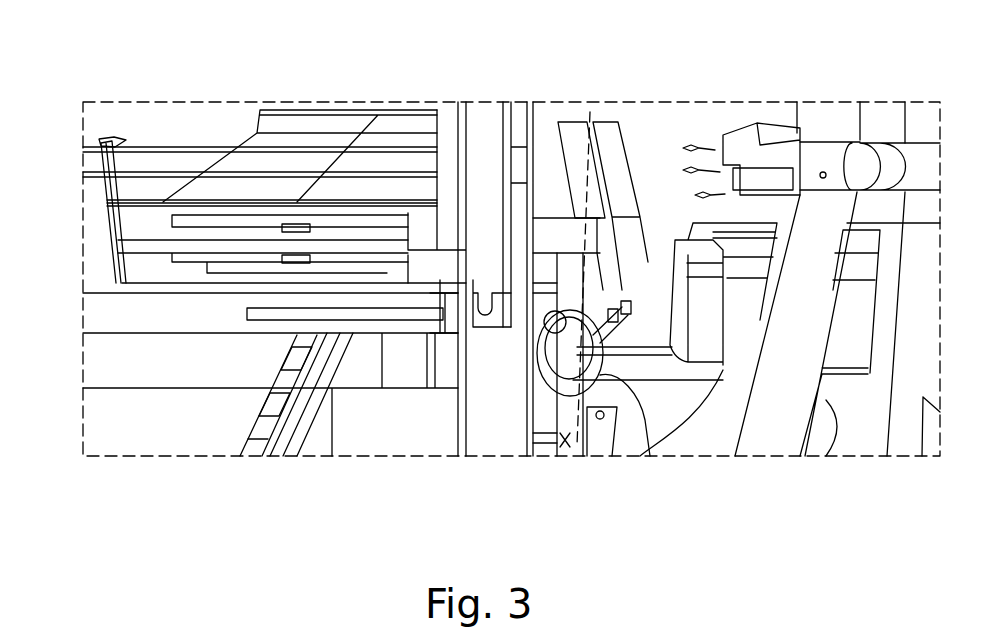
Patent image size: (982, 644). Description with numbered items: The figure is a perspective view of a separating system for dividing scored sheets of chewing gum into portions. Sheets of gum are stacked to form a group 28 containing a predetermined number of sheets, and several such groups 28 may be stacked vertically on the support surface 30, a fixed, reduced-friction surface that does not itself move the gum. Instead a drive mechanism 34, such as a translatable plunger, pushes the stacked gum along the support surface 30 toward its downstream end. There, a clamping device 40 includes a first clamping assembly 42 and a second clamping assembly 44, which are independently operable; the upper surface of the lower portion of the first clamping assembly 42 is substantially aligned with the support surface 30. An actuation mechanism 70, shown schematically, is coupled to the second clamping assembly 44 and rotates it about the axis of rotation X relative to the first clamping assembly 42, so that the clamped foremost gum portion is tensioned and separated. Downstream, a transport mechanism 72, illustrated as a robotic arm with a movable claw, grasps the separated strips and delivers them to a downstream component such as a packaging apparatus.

The group 28 is at (118, 287).
The support surface 30 is at (395, 323).
The drive mechanism 34 is at (292, 147).
The clamping device 40 is at (590, 98).
The first clamping assembly 42 is at (568, 128).
The second clamping assembly 44 is at (610, 148).
The actuation mechanism 70 is at (585, 435).
The transport mechanism 72 is at (783, 143).